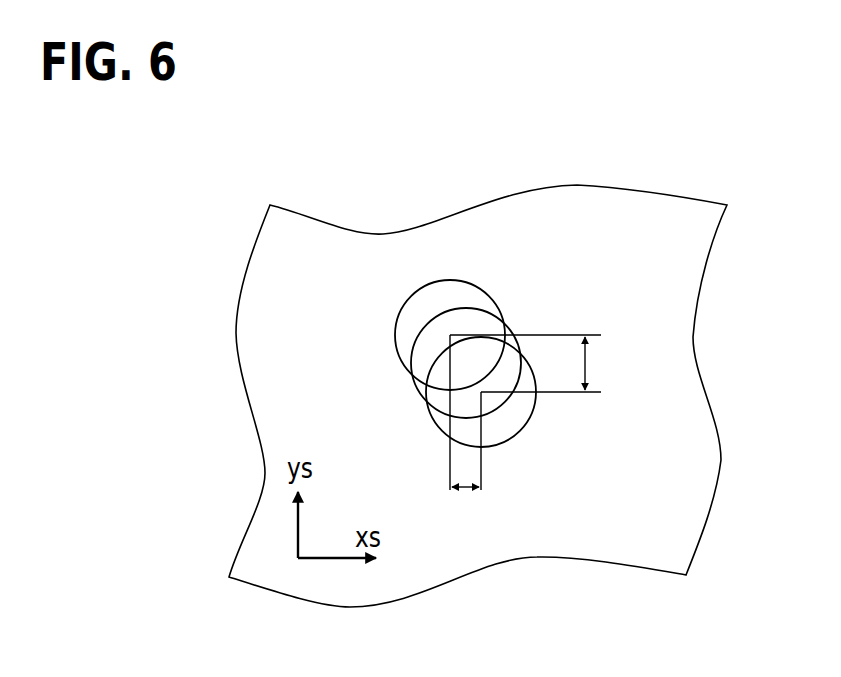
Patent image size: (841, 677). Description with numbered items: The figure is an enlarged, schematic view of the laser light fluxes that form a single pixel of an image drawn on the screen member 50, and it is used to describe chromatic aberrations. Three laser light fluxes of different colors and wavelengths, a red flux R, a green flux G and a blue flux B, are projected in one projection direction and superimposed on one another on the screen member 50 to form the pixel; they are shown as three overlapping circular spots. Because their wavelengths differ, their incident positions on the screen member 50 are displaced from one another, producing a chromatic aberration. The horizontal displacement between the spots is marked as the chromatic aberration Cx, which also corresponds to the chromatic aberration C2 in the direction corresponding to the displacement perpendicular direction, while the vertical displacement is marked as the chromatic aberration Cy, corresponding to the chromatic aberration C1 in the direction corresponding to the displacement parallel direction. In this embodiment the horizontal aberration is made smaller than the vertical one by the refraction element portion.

The screen member 50 is at (565, 184).
The red laser light flux R is at (450, 335).
The green laser light flux G is at (466, 363).
The blue laser light flux B is at (481, 392).
The chromatic aberration in the direction corresponding to the displacement parallel C1 is at (468, 431).
The chromatic aberration in the direction corresponding to the displacement perpendi C2 is at (557, 363).